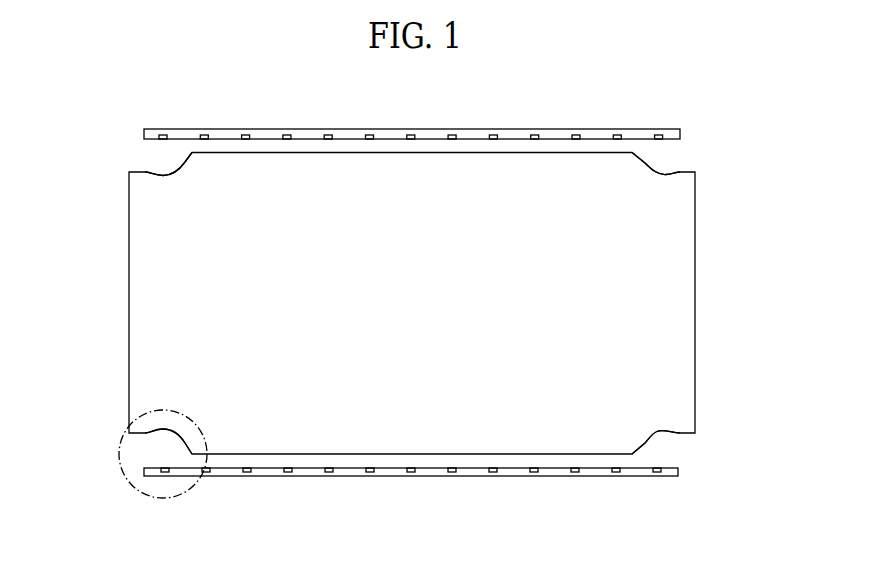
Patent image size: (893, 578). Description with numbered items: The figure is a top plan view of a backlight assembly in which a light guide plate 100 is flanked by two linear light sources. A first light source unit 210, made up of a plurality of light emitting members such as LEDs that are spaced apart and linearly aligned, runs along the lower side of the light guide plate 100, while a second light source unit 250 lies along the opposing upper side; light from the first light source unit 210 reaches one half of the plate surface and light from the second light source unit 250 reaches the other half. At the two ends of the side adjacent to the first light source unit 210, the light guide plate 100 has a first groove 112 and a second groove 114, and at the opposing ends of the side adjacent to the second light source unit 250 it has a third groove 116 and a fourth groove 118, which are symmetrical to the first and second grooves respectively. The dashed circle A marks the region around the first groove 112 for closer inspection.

The light guide plate 100 is at (669, 296).
The first groove 112 is at (183, 443).
The second groove 114 is at (645, 441).
The third groove 116 is at (185, 163).
The fourth groove 118 is at (645, 167).
The first light source unit 210 is at (679, 472).
The second light source unit 250 is at (681, 135).
The enlarged detail region A is at (148, 498).